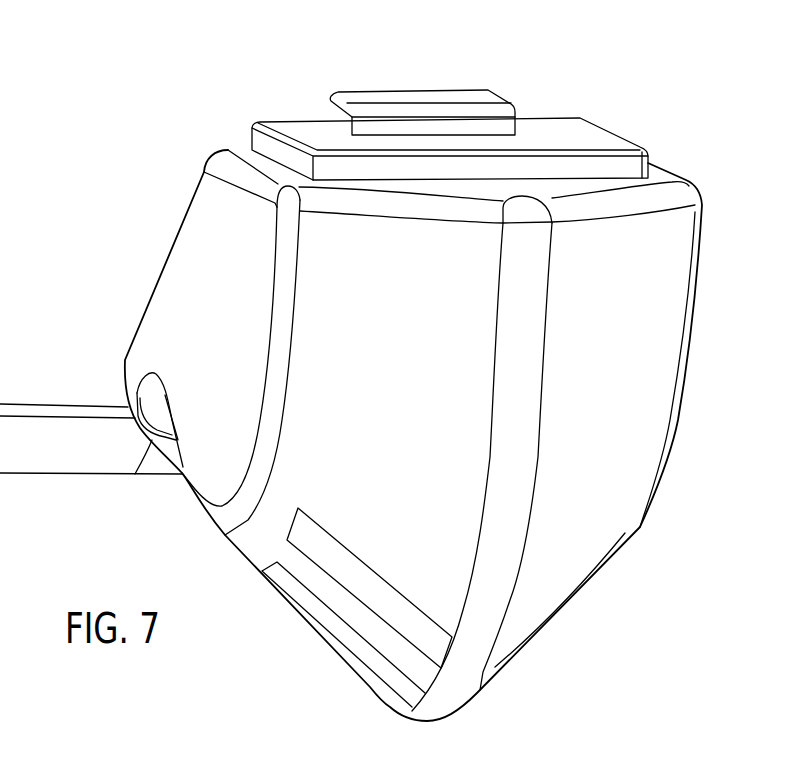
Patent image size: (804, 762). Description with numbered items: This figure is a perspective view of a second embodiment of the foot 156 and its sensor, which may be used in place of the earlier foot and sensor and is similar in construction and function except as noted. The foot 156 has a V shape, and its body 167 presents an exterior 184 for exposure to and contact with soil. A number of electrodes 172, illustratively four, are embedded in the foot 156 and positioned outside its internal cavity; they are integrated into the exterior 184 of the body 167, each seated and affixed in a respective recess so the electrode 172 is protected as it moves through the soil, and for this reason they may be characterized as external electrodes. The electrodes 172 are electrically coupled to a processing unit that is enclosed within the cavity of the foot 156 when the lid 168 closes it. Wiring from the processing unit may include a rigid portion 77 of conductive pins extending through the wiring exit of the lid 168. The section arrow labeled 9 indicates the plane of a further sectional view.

The foot 156 is at (103, 172).
The rigid portion 77 is at (453, 97).
The lid 168 is at (593, 141).
The exterior 184 is at (577, 308).
The body 167 is at (577, 349).
The electrodes 172 is at (282, 580).
The section line 9- 9 is at (410, 77).